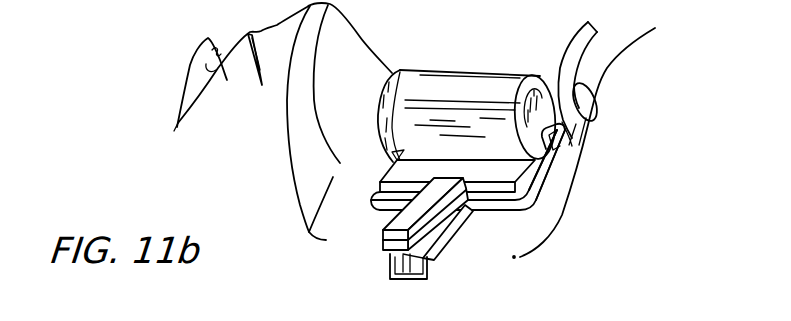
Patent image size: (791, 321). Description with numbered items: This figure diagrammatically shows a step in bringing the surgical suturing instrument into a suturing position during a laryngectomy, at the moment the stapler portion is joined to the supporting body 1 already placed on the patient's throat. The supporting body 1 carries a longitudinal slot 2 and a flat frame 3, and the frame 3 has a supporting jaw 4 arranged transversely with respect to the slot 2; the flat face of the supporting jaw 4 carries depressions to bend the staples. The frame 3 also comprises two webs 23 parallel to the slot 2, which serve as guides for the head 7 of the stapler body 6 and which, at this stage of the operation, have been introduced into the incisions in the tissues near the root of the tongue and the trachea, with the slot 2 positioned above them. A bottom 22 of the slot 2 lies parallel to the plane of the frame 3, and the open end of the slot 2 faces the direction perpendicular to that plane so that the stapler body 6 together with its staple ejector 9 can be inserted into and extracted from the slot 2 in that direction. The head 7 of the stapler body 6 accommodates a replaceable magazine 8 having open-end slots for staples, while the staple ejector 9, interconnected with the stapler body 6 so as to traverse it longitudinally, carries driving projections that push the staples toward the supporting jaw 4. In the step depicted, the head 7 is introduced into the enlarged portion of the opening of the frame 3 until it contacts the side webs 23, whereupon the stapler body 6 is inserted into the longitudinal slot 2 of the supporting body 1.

The supporting body 1 is at (445, 268).
The slot 2 is at (392, 267).
The flat frame 3 is at (477, 200).
The supporting jaw 4 is at (547, 112).
The stapler body 6 is at (380, 224).
The head 7 is at (397, 175).
The replaceable magazine 8 is at (539, 160).
The staple ejector 9 is at (385, 245).
The bottom 22 is at (410, 272).
The webs 23 is at (555, 142).